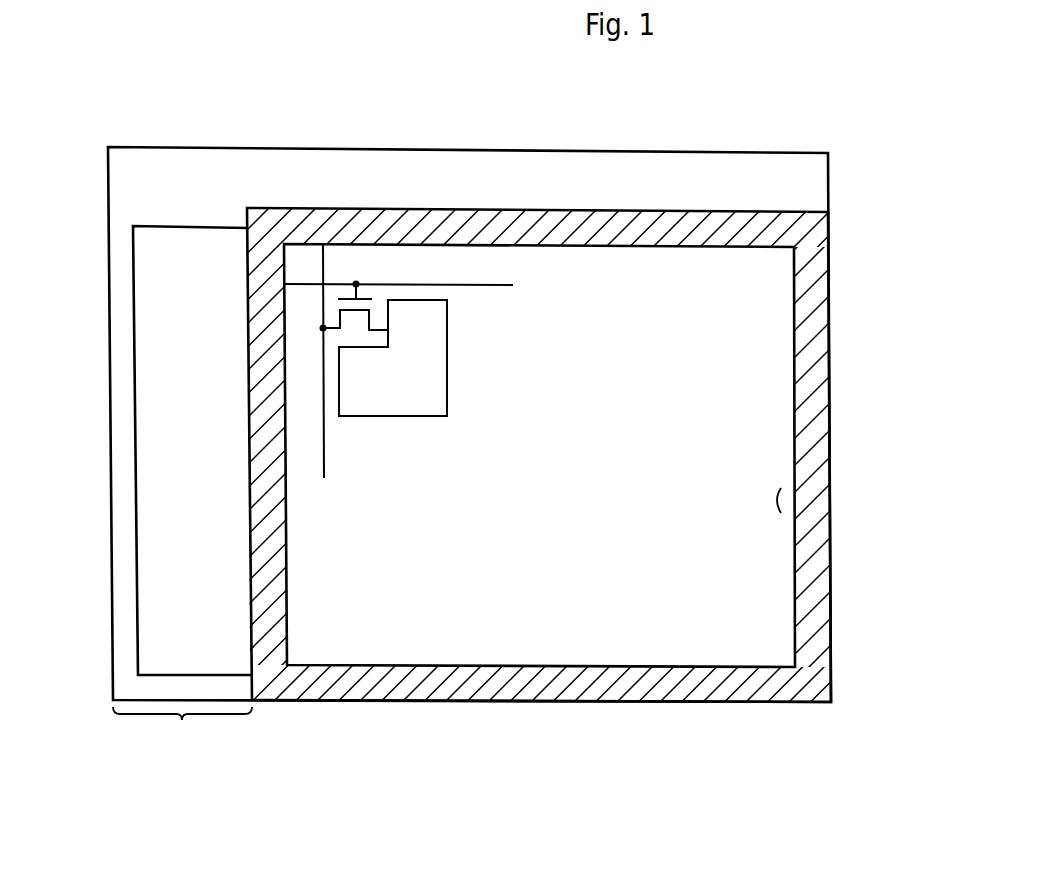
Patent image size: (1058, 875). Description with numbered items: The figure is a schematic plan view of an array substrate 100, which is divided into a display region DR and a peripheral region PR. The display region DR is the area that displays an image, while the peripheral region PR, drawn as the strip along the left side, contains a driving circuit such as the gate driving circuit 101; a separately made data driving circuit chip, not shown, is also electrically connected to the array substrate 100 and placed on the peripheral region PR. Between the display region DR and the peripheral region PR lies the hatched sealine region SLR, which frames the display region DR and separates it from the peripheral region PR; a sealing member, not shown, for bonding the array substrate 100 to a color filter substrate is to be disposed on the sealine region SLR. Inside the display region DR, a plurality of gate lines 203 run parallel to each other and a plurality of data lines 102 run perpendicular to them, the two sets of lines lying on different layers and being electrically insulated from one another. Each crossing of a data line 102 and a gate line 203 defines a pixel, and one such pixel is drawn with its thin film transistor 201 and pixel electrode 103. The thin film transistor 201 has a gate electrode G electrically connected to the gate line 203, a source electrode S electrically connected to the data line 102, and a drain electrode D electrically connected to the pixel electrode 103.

The array substrate 100 is at (516, 85).
The gate driving circuit 101 is at (152, 533).
The data line 102 is at (324, 450).
The pixel electrode 103 is at (439, 401).
The thin film transistor 201 is at (379, 300).
The gate line 203 is at (487, 290).
The display region DR is at (778, 500).
The sealine region SLR is at (813, 593).
The peripheral region PR is at (182, 731).
The gate electrode G is at (331, 299).
The source electrode S is at (354, 334).
The drain electrode D is at (401, 329).